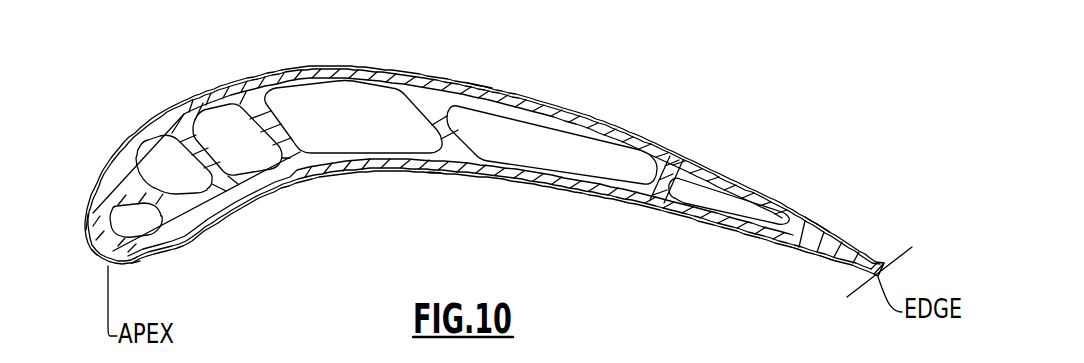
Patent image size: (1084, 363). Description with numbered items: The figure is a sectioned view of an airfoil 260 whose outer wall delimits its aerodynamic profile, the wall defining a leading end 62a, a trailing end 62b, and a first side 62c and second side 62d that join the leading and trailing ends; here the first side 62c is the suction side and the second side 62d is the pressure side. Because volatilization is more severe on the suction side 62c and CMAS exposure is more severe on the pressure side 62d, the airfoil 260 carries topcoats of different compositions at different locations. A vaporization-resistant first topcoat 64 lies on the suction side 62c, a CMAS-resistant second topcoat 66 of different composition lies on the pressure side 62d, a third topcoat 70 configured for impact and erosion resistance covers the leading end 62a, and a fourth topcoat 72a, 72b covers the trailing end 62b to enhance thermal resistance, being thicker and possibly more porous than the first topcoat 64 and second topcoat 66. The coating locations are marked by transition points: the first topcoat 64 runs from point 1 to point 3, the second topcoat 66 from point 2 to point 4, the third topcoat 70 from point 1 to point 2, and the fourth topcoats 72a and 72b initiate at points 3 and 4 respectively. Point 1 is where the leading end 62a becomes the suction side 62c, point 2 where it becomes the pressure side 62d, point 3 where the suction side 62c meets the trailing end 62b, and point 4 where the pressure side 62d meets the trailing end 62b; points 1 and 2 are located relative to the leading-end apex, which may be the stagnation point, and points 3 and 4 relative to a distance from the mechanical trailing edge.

The airfoil 260 is at (602, 262).
The point 1 is at (90, 232).
The point 2 is at (178, 251).
The point 3 is at (815, 219).
The point 4 is at (797, 250).
The leading end 62a is at (99, 259).
The trailing end 62b is at (868, 243).
The first side (suction side) 62c is at (478, 86).
The second side (pressure side) 62d is at (435, 174).
The first topcoat 64 is at (557, 105).
The second topcoat 66 is at (530, 190).
The third topcoat 70 is at (138, 263).
The fourth topcoat 72a is at (833, 230).
The fourth topcoat 72b is at (827, 258).